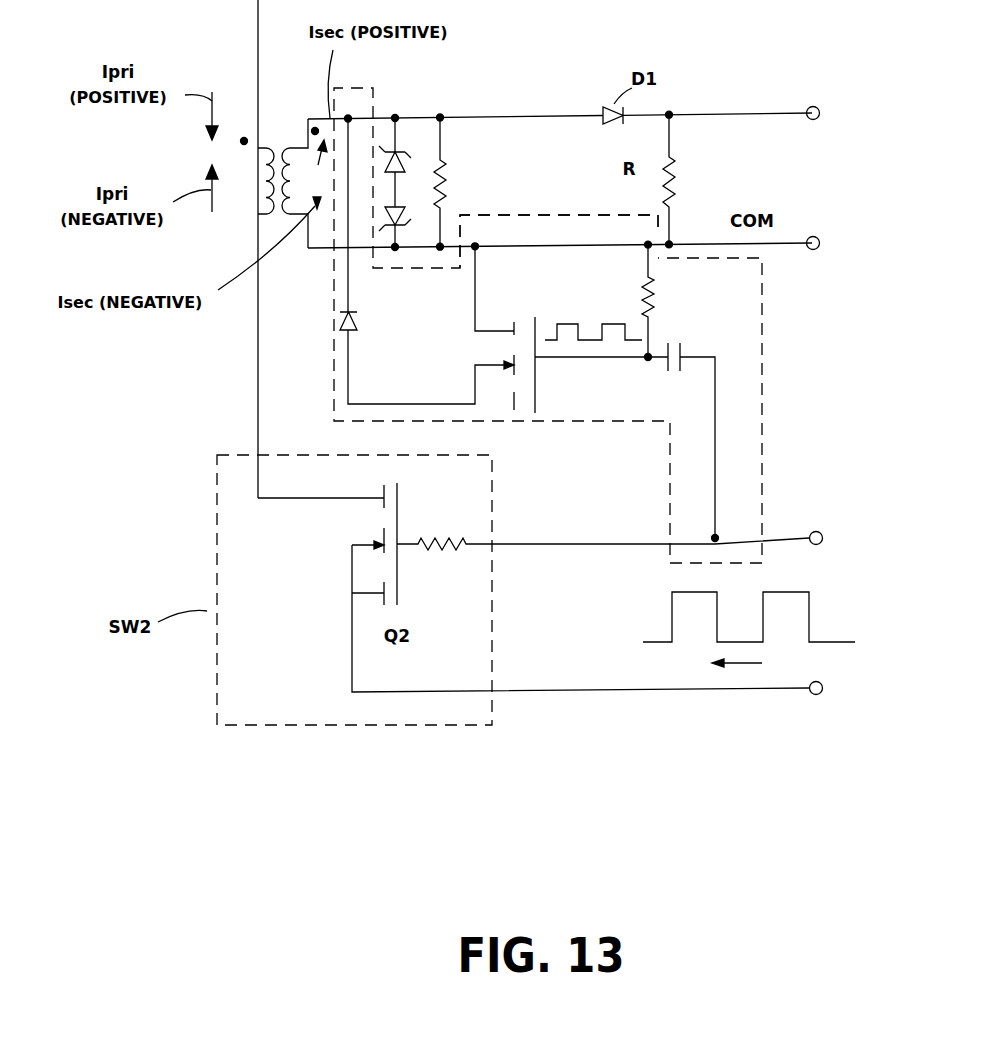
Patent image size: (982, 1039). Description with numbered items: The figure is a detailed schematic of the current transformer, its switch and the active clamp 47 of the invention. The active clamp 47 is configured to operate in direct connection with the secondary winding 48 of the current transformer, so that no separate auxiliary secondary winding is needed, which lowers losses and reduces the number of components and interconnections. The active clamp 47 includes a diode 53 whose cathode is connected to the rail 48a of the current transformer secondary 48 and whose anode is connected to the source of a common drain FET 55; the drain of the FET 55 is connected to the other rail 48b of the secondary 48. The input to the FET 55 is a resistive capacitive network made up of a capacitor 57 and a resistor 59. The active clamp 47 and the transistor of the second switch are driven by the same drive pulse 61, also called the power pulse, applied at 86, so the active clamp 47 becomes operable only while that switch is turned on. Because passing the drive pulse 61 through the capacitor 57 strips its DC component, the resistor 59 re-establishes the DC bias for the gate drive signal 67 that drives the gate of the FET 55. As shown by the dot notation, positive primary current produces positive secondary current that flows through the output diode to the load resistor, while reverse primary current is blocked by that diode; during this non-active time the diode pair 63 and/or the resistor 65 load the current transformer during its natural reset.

The active clamp 47 is at (765, 259).
The secondary winding 48 is at (289, 147).
The rail 48a is at (538, 112).
The rail 48b is at (498, 242).
The diode 53 is at (362, 320).
The common drain FET 55 is at (520, 318).
The capacitor 57 is at (662, 368).
The resistor 59 is at (657, 288).
The drive pulse 61 is at (817, 583).
The diode pair 63 is at (405, 180).
The resistor 65 is at (452, 178).
The gate drive signal 67 is at (568, 363).
The drive input point 86 is at (756, 663).